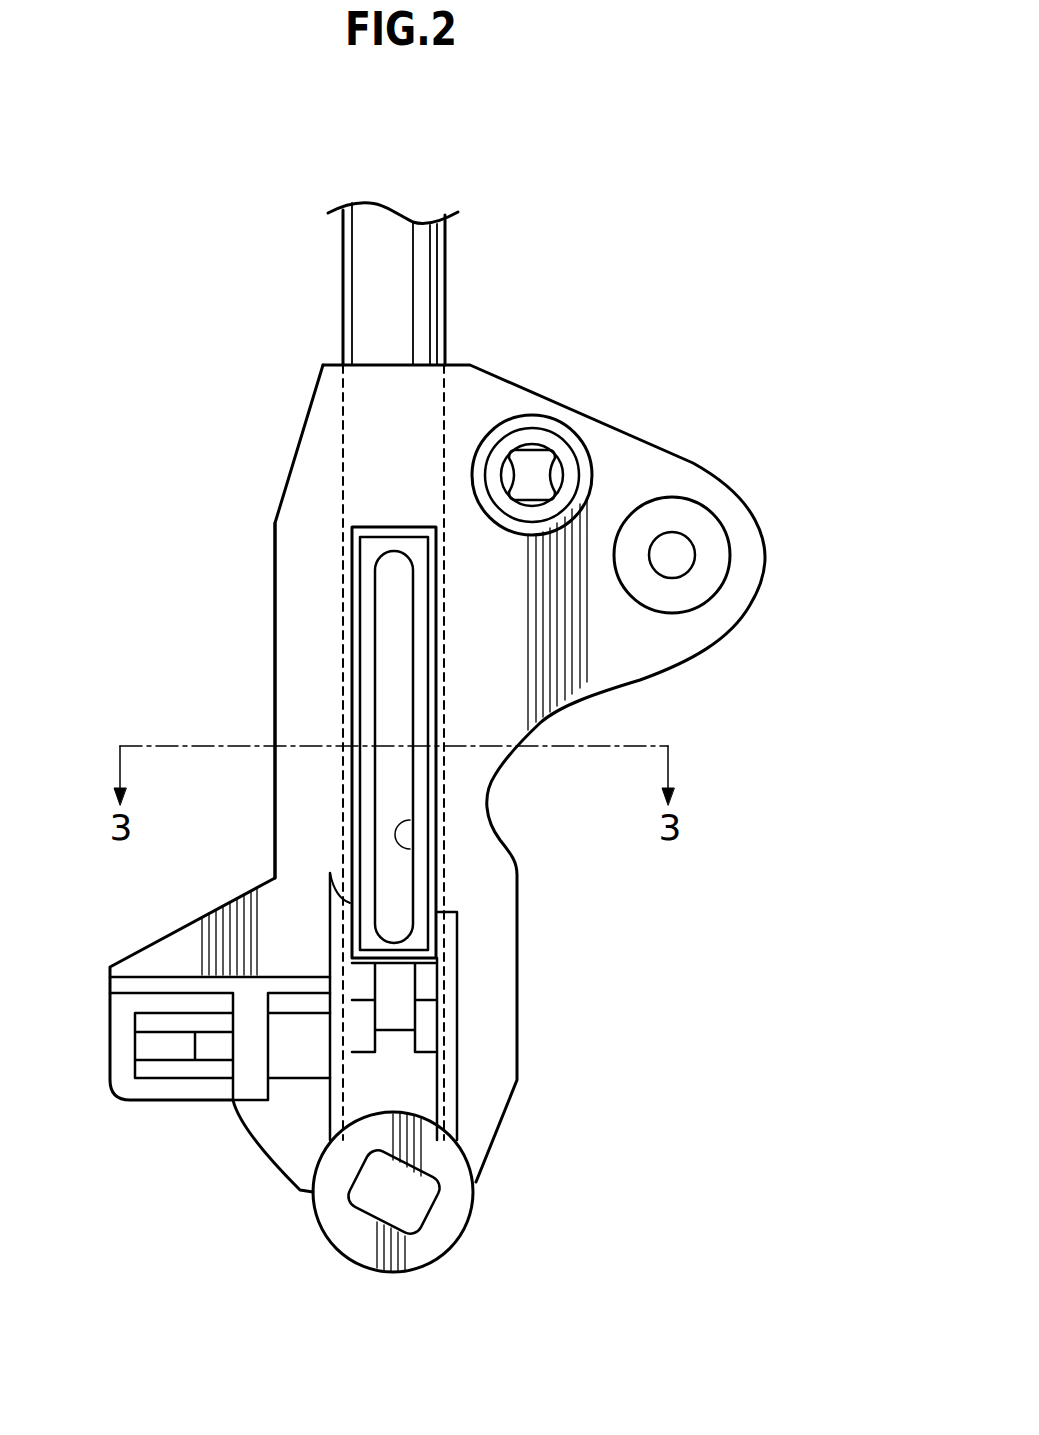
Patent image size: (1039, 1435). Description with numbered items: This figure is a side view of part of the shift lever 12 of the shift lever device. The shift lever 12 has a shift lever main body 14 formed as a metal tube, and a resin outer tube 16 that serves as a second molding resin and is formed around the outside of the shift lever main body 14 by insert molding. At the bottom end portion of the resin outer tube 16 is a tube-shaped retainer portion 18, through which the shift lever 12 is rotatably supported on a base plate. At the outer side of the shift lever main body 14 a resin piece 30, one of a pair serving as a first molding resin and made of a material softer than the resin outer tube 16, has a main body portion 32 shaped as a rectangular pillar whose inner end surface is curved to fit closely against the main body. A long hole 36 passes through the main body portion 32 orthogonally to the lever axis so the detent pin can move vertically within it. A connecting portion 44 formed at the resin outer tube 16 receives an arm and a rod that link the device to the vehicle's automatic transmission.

The shift lever 12 is at (295, 455).
The shift lever main body 14 is at (357, 293).
The resin outer tube 16 is at (287, 593).
The retainer portion 18 is at (368, 1245).
The resin piece 30 is at (357, 700).
The main body portion 32 is at (368, 817).
The long hole 36 is at (410, 849).
The connecting portion 44 is at (707, 542).